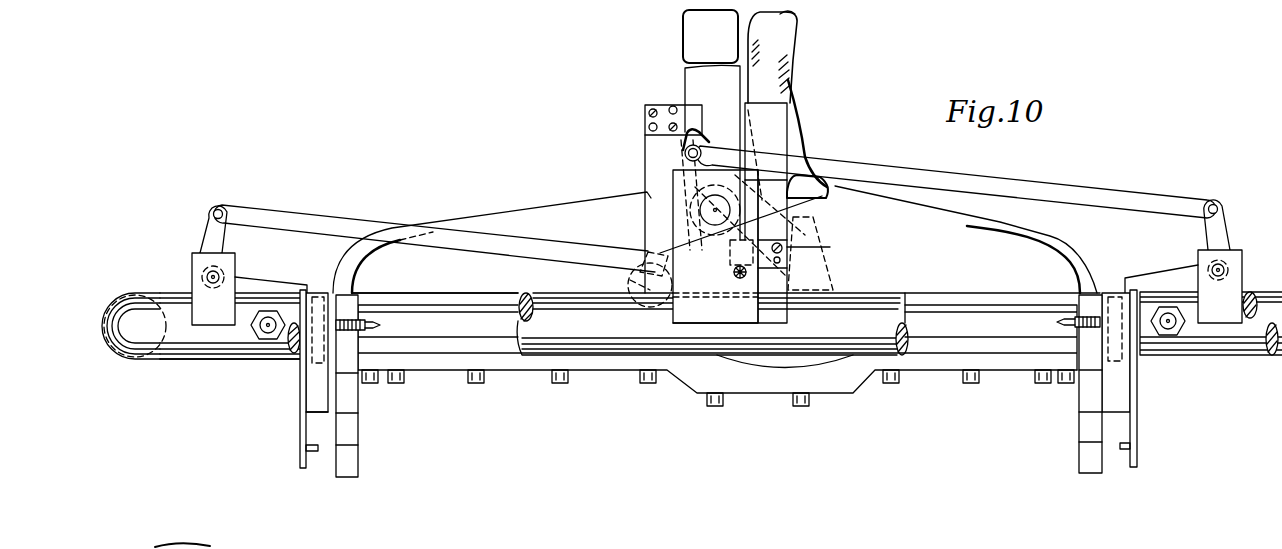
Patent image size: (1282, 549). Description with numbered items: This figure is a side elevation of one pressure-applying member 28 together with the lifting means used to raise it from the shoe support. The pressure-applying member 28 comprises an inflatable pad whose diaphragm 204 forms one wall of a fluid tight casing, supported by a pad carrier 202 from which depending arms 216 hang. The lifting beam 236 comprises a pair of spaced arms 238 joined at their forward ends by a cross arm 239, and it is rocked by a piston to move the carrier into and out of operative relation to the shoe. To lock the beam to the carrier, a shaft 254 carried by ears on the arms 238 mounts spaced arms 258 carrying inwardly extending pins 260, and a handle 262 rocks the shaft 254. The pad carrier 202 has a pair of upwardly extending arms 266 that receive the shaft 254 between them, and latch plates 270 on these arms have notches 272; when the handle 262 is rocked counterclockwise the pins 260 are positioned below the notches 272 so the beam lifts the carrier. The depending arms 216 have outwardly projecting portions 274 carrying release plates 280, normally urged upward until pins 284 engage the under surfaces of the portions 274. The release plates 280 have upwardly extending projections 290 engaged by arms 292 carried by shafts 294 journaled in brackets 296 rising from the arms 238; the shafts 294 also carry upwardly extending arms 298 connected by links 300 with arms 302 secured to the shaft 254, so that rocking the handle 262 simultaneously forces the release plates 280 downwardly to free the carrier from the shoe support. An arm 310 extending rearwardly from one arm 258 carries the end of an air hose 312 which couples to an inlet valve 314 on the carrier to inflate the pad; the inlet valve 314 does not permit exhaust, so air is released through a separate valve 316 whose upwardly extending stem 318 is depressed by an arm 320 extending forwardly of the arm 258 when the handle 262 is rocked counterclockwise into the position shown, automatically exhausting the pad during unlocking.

The pressure applying member 28 is at (484, 190).
The pad carrier 202 is at (548, 220).
The diaphragm 204 is at (450, 345).
The depending arms 216 is at (353, 467).
The lifting beam 236 is at (194, 381).
The spaced arms 238 is at (853, 310).
The cross arm 239 is at (113, 353).
The shaft 254 is at (705, 205).
The arms 258 is at (671, 195).
The pins 260 is at (712, 133).
The handle 262 is at (700, 35).
The upwardly extending arms 266 is at (777, 117).
The latch plates 270 is at (665, 108).
The notches 272 is at (683, 145).
The outwardly projecting portions 274 is at (327, 410).
The release plates 280 is at (307, 422).
The pins 284 is at (315, 453).
The upwardly extending projections 290 is at (312, 293).
The arms 292 is at (257, 282).
The shafts 294 is at (213, 284).
The brackets 296 is at (193, 262).
The upwardly extending arms 298 is at (212, 235).
The links 300 is at (372, 230).
The arms 302 is at (702, 148).
The arm 310 is at (812, 177).
The air hose 312 is at (789, 35).
The inlet valve 314 is at (813, 217).
The valve 316 is at (633, 285).
The stem 318 is at (643, 294).
The arm 320 is at (640, 258).